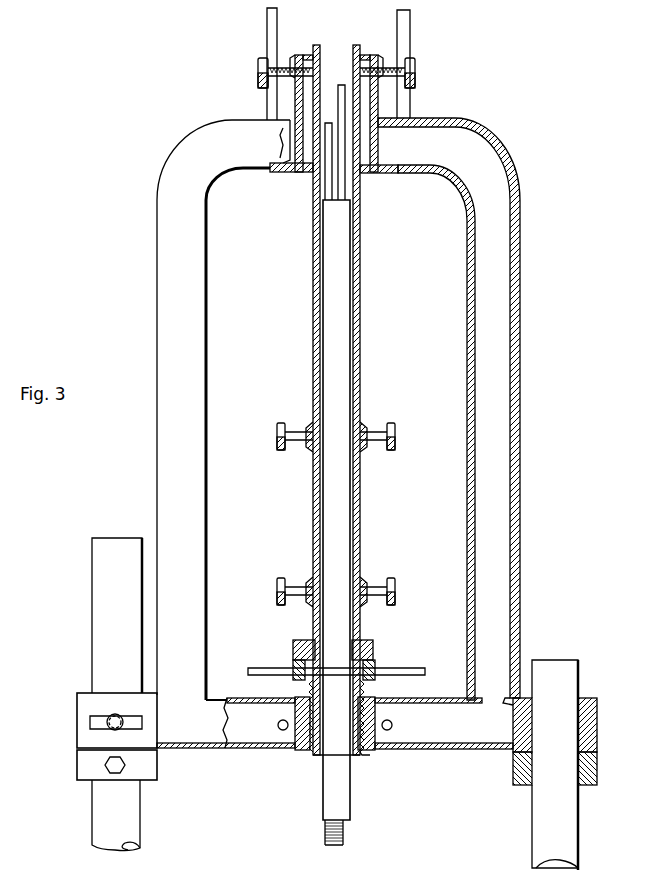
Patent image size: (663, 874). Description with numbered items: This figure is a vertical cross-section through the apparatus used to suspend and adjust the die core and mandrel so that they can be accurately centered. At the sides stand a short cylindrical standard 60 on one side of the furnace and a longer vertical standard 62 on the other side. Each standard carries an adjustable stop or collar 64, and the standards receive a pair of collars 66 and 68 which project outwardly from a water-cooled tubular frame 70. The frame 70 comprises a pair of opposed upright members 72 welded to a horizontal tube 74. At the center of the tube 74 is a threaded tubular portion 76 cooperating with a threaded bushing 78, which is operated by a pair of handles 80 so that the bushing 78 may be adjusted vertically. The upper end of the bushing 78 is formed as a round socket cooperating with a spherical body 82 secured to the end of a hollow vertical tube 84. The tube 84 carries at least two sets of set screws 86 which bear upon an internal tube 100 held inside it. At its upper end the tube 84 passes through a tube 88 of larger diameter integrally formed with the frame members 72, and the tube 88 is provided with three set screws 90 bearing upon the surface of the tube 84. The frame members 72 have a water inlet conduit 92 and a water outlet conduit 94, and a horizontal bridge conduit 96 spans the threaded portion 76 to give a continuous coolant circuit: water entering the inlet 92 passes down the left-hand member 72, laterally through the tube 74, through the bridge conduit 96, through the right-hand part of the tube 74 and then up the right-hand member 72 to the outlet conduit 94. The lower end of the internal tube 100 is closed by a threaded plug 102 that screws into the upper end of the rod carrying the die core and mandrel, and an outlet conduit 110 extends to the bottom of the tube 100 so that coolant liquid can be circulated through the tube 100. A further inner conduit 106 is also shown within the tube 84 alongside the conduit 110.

The short cylindrical standard 60 is at (562, 678).
The vertical standard 62 is at (105, 586).
The adjustable stop or collar 64 is at (77, 770).
The collar 66 is at (77, 733).
The collar 68 is at (598, 716).
The water-cooled tubular frame 70 is at (343, 409).
The upright frame member 72 is at (157, 466).
The horizontal tube 74 is at (335, 741).
The threaded tubular portion 76 is at (370, 755).
The threaded bushing 78 is at (366, 689).
The handle 80 is at (415, 668).
The spherical body 82 is at (375, 646).
The hollow vertical tube 84 is at (361, 521).
The set screws 86 is at (395, 440).
The tube of larger diameter 88 is at (380, 150).
The set screws 90 is at (258, 64).
The water inlet conduit 92 is at (267, 34).
The water outlet conduit 94 is at (409, 34).
The horizontal bridge conduit 96 is at (278, 725).
The internal tube 100 is at (351, 314).
The threaded plug 102 is at (345, 838).
The inner rod 106 is at (345, 190).
The outlet conduit 110 is at (328, 185).